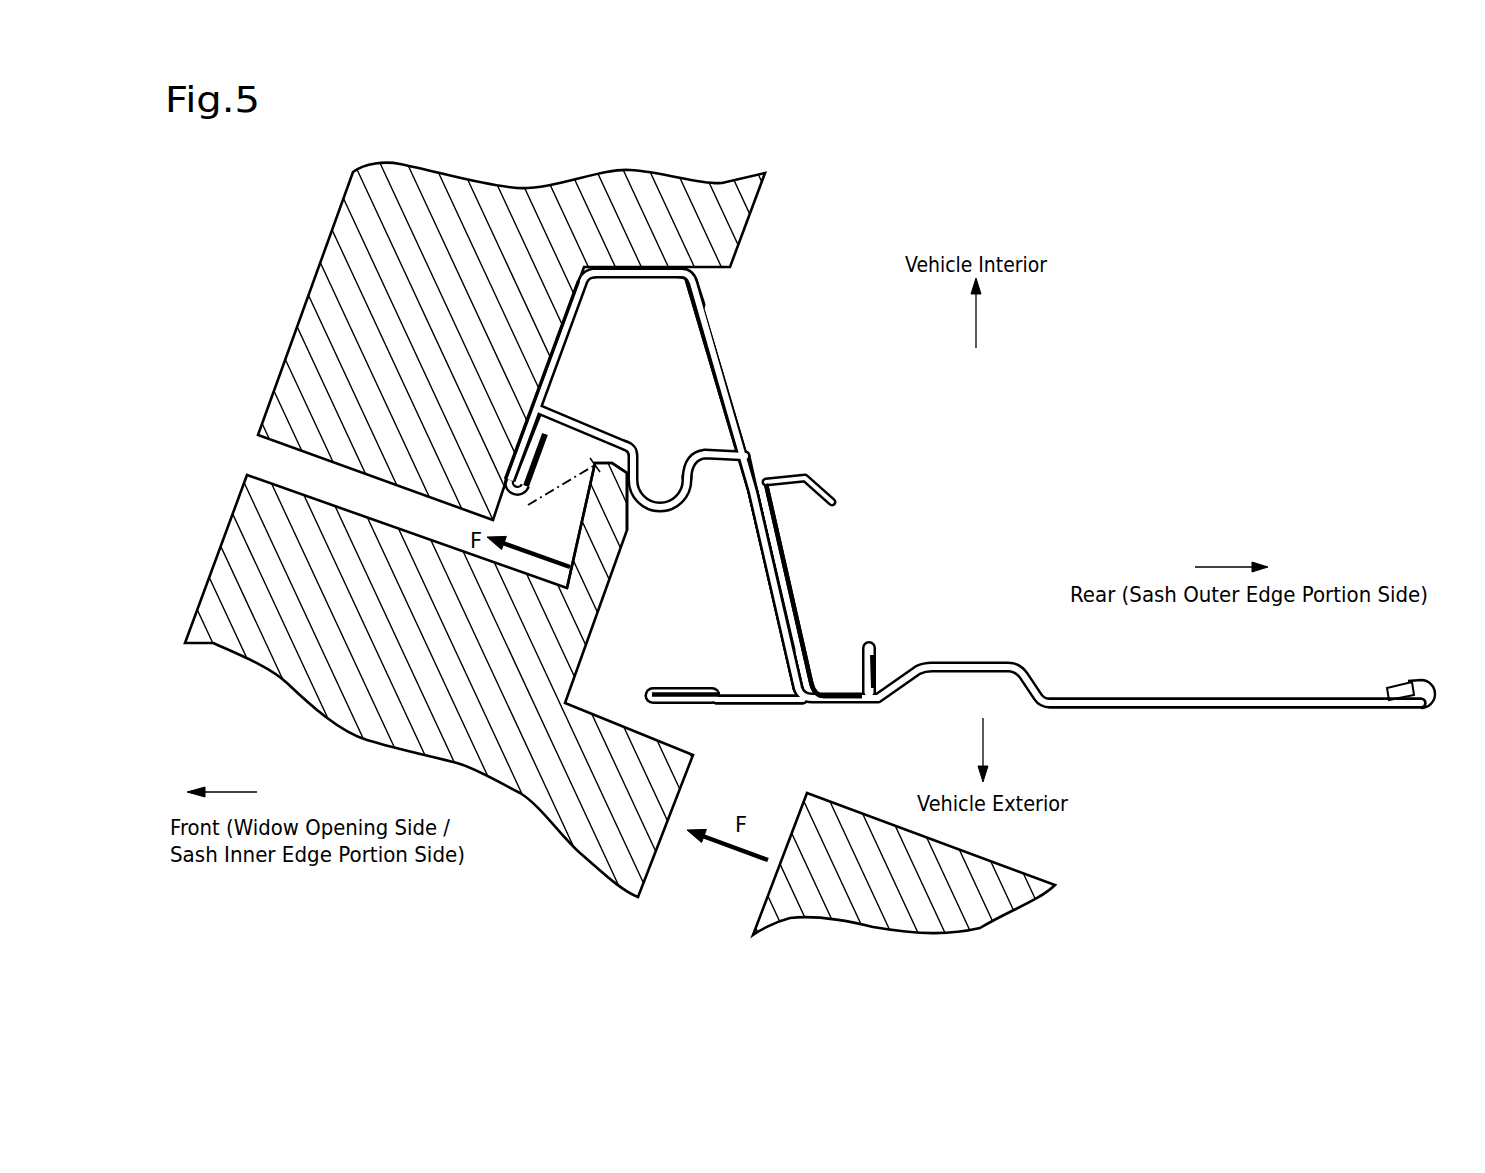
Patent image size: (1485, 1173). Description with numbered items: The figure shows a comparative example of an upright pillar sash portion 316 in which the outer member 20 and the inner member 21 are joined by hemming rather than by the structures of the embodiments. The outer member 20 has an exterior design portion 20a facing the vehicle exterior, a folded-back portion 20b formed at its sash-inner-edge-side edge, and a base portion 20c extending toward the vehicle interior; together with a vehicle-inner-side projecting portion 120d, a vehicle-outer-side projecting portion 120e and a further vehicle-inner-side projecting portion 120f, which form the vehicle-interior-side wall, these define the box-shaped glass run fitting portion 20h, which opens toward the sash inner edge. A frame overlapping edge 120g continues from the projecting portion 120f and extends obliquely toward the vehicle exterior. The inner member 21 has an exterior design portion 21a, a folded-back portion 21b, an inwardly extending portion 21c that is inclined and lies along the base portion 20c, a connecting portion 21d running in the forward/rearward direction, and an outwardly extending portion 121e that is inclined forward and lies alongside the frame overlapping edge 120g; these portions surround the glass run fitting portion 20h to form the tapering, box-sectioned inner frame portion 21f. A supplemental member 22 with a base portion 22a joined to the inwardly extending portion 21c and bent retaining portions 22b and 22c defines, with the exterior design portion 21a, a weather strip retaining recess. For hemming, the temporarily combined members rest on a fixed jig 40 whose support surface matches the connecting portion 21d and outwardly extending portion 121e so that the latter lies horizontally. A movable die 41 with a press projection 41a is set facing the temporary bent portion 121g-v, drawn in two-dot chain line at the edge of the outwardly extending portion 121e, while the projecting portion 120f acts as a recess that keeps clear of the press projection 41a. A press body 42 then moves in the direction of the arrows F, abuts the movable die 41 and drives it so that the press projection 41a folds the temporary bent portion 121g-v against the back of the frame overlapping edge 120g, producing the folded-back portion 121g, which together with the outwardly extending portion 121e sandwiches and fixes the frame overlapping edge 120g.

The fixed jig 40 is at (512, 210).
The movable die 41 is at (253, 538).
The press projection 41a is at (613, 508).
The press body 42 is at (868, 843).
The outer member 20 is at (763, 708).
The exterior design portion 20a is at (722, 706).
The folded-back portion 20b is at (670, 688).
The base portion 20c is at (772, 593).
The glass run fitting portion 20h is at (726, 522).
The inner member 21 is at (1190, 712).
The exterior design portion 21a is at (1098, 705).
The folded-back portion 21b is at (1408, 683).
The inwardly extending portion 21c is at (734, 382).
The connecting portion 21d is at (641, 276).
The inner frame portion 21f is at (706, 294).
The supplemental member 22 is at (838, 490).
The base portion 22a is at (787, 556).
The retaining portion 22b is at (874, 645).
The retaining portion 22c is at (841, 506).
The vehicle-inner-side projecting portion 120d is at (717, 449).
The vehicle-outer-side projecting portion 120e is at (663, 513).
The vehicle-inner-side projecting portion 120f is at (601, 430).
The frame overlapping edge 120g is at (546, 426).
The outwardly extending portion 121e is at (567, 330).
The folded-back portion 121g is at (548, 442).
The temporary bent portion 121g-v is at (592, 470).
The upright pillar sash portion 316 is at (1237, 463).